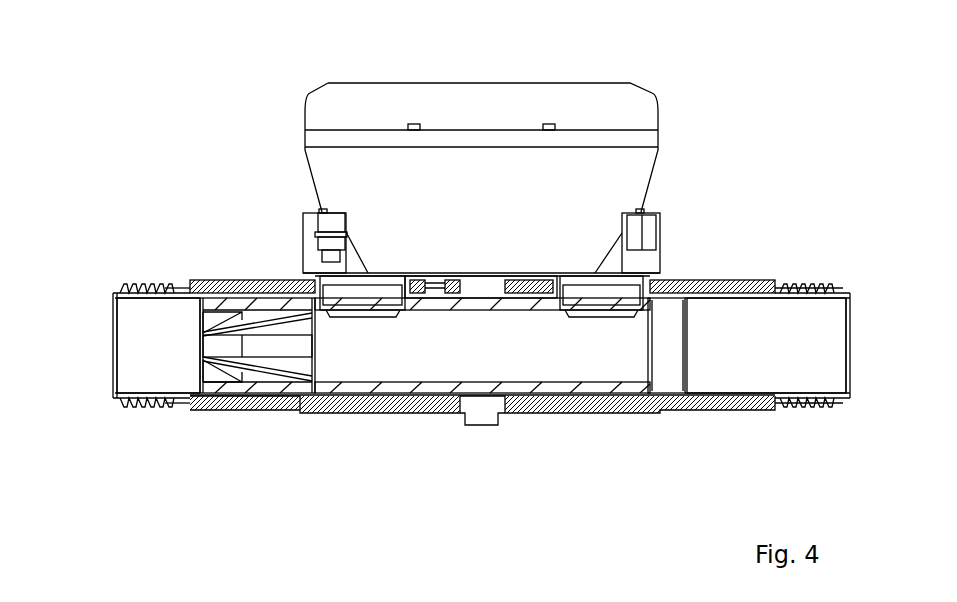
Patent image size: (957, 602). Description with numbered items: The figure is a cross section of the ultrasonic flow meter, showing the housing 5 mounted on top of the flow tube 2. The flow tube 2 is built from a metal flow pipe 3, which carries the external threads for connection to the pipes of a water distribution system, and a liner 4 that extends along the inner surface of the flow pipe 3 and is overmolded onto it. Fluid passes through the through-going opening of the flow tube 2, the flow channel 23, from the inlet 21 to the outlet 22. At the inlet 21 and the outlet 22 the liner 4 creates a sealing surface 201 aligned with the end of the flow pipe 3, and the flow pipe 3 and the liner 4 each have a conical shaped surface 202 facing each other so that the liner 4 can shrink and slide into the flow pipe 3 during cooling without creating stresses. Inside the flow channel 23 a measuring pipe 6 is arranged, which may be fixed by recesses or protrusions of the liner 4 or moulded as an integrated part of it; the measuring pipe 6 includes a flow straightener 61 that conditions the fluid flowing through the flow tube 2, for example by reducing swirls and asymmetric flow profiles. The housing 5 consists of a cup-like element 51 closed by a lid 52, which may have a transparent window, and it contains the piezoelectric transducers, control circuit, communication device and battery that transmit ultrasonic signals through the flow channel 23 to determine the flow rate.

The flow tube 2 is at (764, 266).
The sealing surface 201 is at (116, 292).
The conical shaped surface 202 is at (123, 291).
The inlet 21 is at (95, 335).
The outlet 22 is at (862, 336).
The flow channel 23 is at (720, 352).
The flow pipe 3 is at (242, 282).
The liner 4 is at (663, 300).
The housing 5 is at (663, 188).
The cup-like element 51 is at (351, 180).
The lid 52 is at (473, 108).
The measuring pipe 6 is at (360, 387).
The flow straightener 61 is at (243, 357).